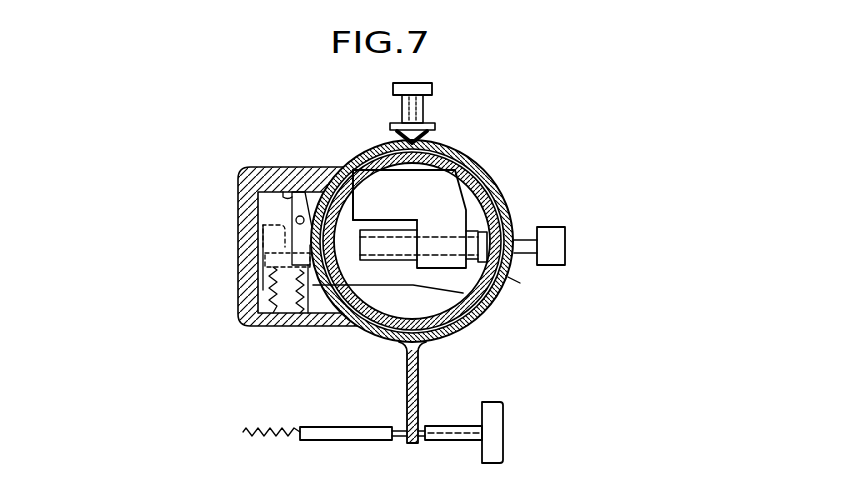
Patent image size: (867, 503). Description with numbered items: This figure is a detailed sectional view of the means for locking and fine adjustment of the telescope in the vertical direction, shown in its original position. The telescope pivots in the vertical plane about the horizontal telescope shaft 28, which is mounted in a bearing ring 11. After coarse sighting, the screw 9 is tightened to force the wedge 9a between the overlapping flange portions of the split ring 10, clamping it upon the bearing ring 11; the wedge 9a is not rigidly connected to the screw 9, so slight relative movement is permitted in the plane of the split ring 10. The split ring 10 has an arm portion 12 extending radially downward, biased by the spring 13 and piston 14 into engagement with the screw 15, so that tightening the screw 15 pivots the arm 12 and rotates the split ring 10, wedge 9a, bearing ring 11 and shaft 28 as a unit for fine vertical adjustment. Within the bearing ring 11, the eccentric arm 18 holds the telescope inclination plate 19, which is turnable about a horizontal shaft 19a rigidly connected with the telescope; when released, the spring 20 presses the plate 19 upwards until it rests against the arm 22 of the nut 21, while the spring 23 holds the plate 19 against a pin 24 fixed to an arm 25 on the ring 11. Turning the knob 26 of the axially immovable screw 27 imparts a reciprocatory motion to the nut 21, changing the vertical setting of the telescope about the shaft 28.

The screw 9 is at (430, 100).
The wedge 9a is at (437, 127).
The split ring 10 is at (474, 333).
The bearing ring 11 is at (496, 298).
The arm portion 12 is at (418, 372).
The spring 13 is at (270, 428).
The piston 14 is at (340, 440).
The screw 15 is at (446, 440).
The eccentric arm 18 is at (288, 192).
The telescope inclination plate 19 is at (268, 257).
The horizontal shaft 19a is at (333, 190).
The spring 20 is at (308, 313).
The nut 21 is at (445, 208).
The arm 22 is at (380, 208).
The spring 23 is at (263, 283).
The pin 24 is at (263, 228).
The arm 25 is at (283, 308).
The knob 26 is at (552, 227).
The screw 27 is at (478, 229).
The horizontal telescope shaft 28 is at (528, 286).